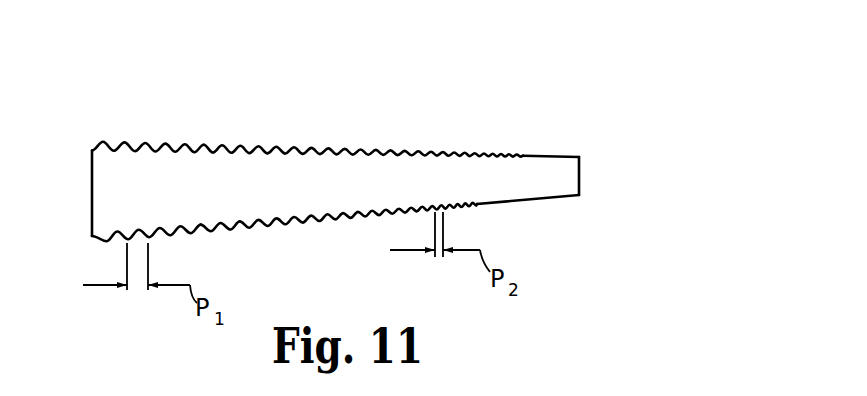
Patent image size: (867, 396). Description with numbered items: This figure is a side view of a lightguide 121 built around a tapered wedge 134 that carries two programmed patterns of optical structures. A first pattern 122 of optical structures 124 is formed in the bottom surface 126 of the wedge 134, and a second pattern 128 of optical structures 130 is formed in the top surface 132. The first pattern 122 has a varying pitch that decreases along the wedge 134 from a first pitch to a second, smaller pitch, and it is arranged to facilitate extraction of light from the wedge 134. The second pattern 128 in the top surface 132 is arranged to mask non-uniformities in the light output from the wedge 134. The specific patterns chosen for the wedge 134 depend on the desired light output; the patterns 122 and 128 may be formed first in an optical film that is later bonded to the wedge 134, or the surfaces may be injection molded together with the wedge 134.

The lightguide 121 is at (368, 169).
The first pattern 122 is at (284, 245).
The optical structures 124 is at (218, 232).
The bottom surface 126 is at (478, 202).
The second pattern 128 is at (307, 116).
The optical structures 130 is at (150, 142).
The top surface 132 is at (523, 156).
The wedge 134 is at (570, 173).